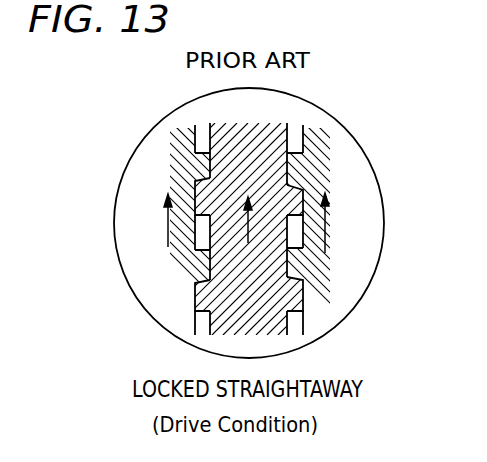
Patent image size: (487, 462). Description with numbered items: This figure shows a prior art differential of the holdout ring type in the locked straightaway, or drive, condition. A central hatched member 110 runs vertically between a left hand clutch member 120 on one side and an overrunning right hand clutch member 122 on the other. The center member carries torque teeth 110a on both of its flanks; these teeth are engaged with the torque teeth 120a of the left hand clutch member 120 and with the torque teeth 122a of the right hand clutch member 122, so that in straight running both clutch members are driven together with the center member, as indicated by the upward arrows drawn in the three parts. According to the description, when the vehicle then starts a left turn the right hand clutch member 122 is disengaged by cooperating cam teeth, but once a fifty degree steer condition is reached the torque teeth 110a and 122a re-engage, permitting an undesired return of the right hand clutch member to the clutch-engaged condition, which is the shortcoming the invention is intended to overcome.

The center drive member 110 is at (253, 335).
The torque teeth 110a is at (207, 184).
The left hand clutch member 120 is at (160, 197).
The torque teeth 120a is at (207, 163).
The right hand clutch member 122 is at (333, 225).
The torque teeth 122a is at (305, 173).